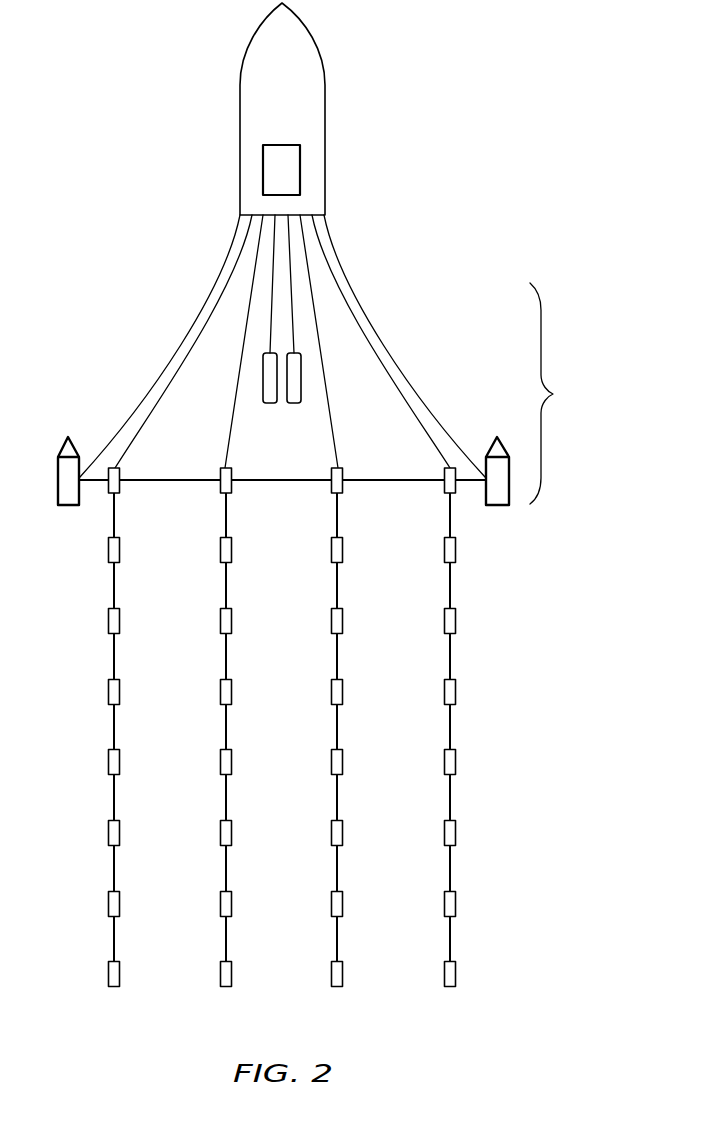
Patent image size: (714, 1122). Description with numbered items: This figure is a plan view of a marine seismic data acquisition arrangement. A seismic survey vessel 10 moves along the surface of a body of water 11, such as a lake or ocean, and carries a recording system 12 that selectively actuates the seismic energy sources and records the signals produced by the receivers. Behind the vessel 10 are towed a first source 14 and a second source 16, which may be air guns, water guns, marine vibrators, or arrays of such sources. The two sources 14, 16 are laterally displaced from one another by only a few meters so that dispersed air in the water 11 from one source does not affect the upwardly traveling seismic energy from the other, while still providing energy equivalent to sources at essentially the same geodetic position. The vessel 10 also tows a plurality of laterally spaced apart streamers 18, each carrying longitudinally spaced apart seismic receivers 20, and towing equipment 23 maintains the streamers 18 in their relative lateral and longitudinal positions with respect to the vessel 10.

The seismic survey vessel 10 is at (327, 95).
The recording system 12 is at (282, 172).
The first seismic energy source 14 is at (267, 405).
The second seismic energy source 16 is at (294, 405).
The seismic streamer 18 is at (114, 513).
The seismic receiver 20 is at (108, 550).
The towing equipment 23 is at (553, 394).
The body of water 11 is at (622, 650).